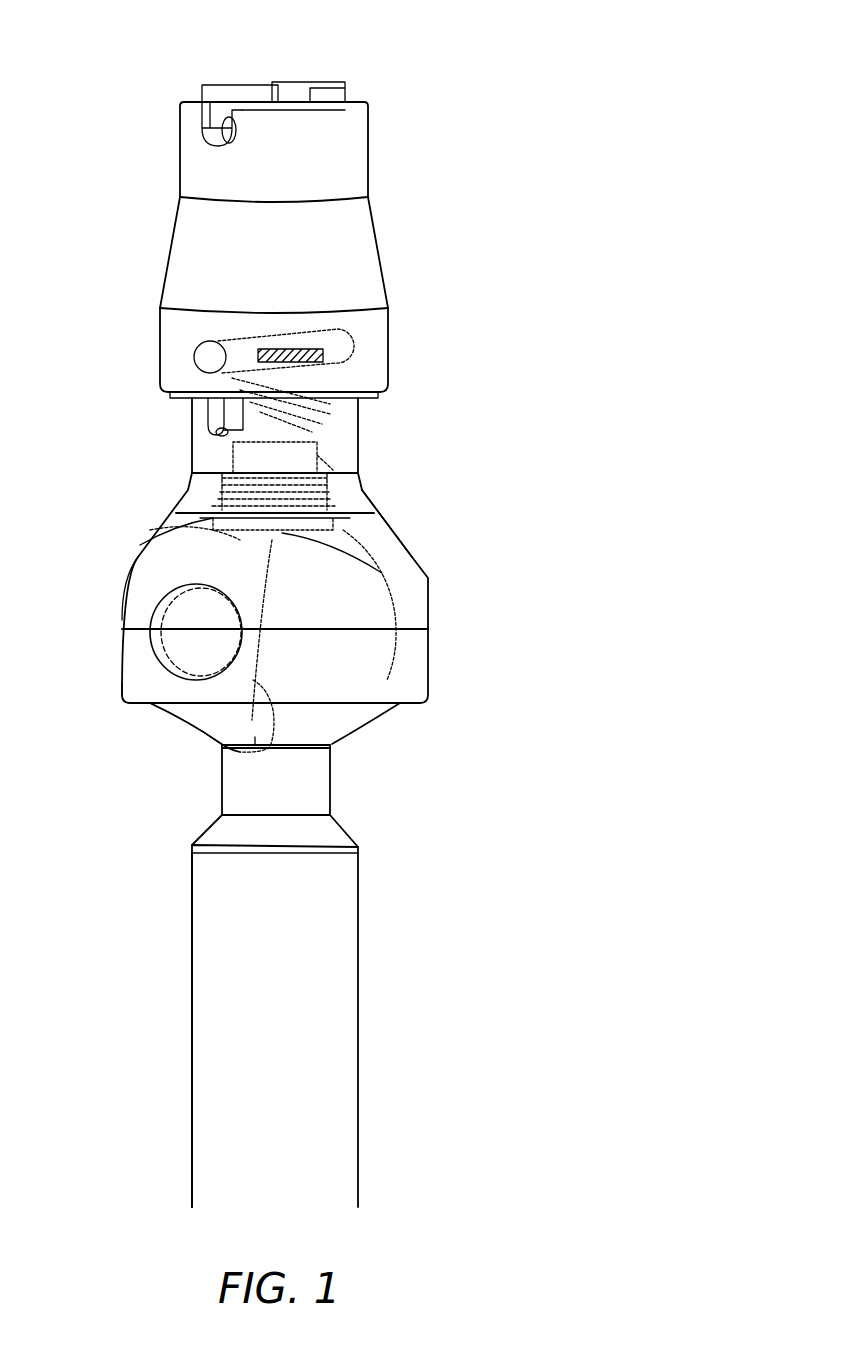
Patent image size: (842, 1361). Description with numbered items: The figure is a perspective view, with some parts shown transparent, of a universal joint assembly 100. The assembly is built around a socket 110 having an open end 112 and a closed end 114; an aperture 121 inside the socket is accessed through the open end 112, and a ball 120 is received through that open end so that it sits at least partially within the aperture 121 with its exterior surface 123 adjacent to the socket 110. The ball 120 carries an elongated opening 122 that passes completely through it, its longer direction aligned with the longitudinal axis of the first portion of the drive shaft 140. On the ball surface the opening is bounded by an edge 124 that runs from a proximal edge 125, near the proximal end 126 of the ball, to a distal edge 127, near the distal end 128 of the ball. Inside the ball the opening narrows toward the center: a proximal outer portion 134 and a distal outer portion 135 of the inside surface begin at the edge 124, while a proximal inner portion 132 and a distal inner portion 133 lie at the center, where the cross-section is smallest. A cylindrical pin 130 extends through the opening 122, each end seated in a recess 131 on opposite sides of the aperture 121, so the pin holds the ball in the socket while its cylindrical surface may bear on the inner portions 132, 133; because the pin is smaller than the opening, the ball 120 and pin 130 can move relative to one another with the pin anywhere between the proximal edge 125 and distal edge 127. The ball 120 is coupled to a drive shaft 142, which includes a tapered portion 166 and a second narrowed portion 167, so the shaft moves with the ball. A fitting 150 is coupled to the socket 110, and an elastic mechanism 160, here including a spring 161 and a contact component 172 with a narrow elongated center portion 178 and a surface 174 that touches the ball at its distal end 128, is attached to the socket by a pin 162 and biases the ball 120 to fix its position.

The universal joint assembly 100 is at (462, 62).
The socket 110 is at (428, 598).
The open end 112 is at (125, 702).
The closed end 114 is at (375, 517).
The ball 120 is at (357, 730).
The aperture 121 is at (402, 707).
The elongated opening 122 is at (212, 722).
The exterior surface 123 is at (290, 724).
The edge 124 is at (258, 608).
The proximal edge 125 is at (222, 778).
The proximal end 126 is at (337, 740).
The distal edge 127 is at (420, 580).
The distal end 128 is at (336, 528).
The pin 130 is at (183, 610).
The recess 131 is at (262, 650).
The proximal inner portion 132 is at (202, 690).
The distal inner portion 133 is at (237, 568).
The proximal outer portion 134 is at (255, 737).
The distal outer portion 135 is at (220, 540).
The first portion of drive shaft 140 is at (359, 945).
The drive shaft 142 is at (192, 893).
The fitting 150 is at (383, 198).
The elastic mechanism 160 is at (312, 528).
The spring 161 is at (317, 423).
The pin 162 is at (217, 358).
The tapered portion 166 is at (350, 836).
The second narrowed portion 167 is at (215, 808).
The contact component 172 is at (212, 522).
The surface of contact component 174 is at (350, 522).
The narrow elongated center portion 178 is at (317, 444).